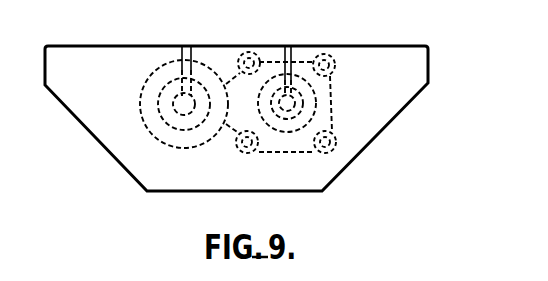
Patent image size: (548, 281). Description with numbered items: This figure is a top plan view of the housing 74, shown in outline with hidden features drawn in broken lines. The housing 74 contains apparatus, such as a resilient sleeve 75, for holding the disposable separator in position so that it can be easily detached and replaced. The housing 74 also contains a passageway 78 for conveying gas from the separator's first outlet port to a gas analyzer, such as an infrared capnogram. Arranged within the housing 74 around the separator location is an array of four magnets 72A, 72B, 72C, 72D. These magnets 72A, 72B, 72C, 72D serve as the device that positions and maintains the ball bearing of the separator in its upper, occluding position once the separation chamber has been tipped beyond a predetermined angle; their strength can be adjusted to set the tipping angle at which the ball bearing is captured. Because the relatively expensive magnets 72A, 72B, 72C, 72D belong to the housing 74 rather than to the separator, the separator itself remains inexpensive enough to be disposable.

The housing 74 is at (382, 62).
The resilient sleeve 75 is at (163, 64).
The passageway 78 is at (296, 33).
The magnet 72A is at (250, 52).
The magnet 72B is at (237, 153).
The magnet 72C is at (335, 153).
The magnet 72D is at (333, 44).